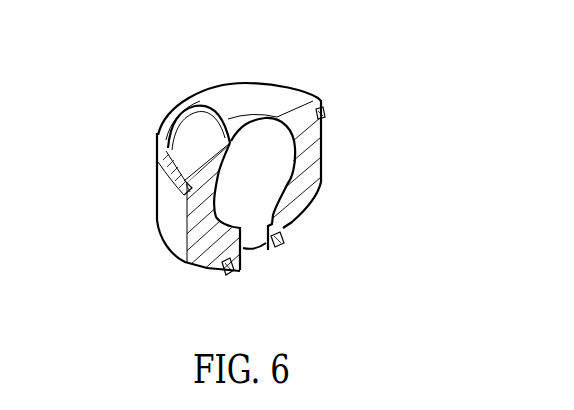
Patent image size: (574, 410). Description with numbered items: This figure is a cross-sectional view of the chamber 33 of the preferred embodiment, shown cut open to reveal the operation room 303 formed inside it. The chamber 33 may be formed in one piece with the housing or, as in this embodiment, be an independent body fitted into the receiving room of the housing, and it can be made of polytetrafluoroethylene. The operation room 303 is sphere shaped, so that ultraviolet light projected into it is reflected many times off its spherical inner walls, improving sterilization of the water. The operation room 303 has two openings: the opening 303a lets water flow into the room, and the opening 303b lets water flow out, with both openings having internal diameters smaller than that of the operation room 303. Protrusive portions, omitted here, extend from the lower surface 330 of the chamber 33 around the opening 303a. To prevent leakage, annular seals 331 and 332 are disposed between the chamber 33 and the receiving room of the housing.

The chamber 33 is at (168, 203).
The operation room 303 is at (248, 145).
The opening 303a is at (226, 125).
The opening 303b is at (253, 251).
The lower surface 330 is at (165, 133).
The annular seal 331 is at (324, 116).
The annular seal 332 is at (285, 229).